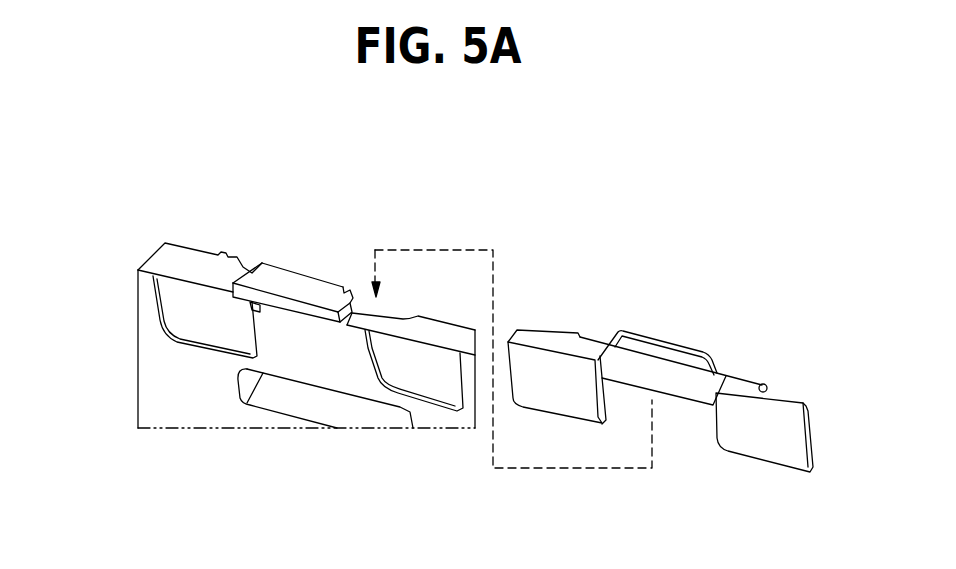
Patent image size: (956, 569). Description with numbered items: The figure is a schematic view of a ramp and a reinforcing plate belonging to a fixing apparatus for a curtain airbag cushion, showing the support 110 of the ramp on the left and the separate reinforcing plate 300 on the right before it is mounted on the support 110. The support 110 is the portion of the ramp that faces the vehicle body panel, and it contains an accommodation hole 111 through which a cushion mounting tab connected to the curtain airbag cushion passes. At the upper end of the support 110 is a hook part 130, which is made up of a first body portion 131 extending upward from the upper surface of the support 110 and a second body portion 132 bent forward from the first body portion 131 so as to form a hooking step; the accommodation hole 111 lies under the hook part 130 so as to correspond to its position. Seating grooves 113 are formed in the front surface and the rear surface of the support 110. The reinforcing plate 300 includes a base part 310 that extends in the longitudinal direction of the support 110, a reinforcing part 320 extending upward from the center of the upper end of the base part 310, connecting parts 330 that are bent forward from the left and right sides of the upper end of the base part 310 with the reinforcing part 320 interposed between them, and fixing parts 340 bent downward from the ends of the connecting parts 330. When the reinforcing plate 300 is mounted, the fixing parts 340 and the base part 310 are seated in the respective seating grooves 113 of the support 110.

The support 110 is at (168, 383).
The accommodation hole 111 is at (327, 407).
The seating grooves 113 is at (187, 308).
The hook part 130 is at (306, 237).
The first body portion 131 is at (353, 284).
The second body portion 132 is at (288, 280).
The reinforcing plate 300 is at (593, 380).
The base part 310 is at (680, 387).
The reinforcing part 320 is at (663, 340).
The connecting parts 330 is at (775, 400).
The fixing parts 340 is at (773, 457).